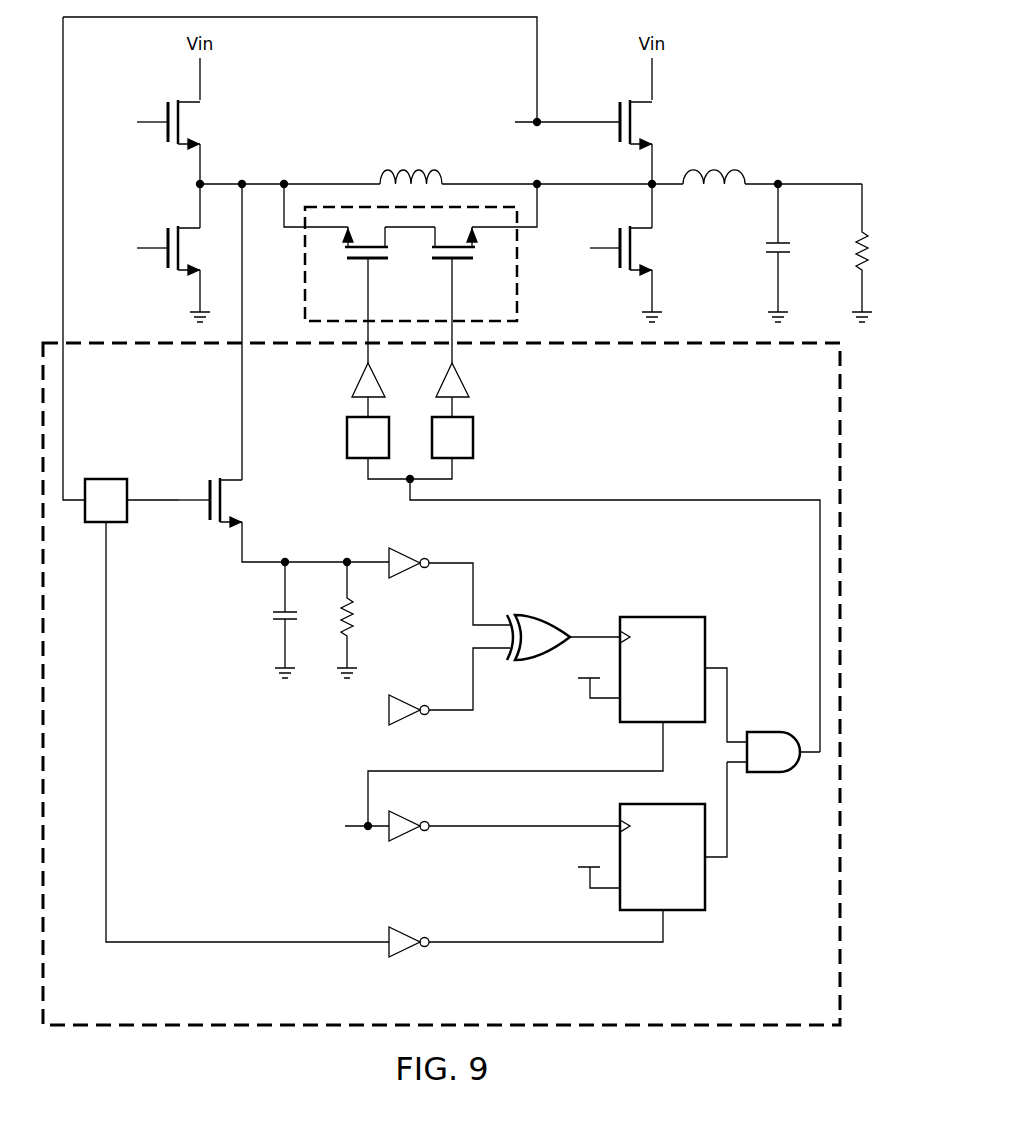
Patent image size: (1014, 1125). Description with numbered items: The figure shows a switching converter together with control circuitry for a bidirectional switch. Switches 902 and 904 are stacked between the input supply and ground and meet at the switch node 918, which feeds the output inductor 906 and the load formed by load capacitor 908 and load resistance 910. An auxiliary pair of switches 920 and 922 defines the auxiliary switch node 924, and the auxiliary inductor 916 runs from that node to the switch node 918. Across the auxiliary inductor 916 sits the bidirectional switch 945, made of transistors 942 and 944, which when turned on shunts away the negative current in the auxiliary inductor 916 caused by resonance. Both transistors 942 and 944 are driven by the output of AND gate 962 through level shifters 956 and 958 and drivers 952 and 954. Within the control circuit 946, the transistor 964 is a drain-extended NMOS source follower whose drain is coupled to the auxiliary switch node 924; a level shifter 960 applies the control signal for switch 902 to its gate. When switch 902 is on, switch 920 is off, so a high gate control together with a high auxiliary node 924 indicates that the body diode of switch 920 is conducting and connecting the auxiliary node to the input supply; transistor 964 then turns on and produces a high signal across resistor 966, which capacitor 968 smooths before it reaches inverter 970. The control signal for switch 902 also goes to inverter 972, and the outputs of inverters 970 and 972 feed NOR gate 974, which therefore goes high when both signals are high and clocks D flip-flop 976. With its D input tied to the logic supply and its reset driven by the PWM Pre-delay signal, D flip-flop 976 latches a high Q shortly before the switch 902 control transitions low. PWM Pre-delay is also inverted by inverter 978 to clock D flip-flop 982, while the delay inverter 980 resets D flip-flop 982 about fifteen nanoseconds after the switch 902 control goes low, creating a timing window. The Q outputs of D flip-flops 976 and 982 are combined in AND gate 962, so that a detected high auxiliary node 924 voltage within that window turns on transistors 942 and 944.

The switch 902 is at (617, 117).
The switch 904 is at (617, 244).
The inductor 906 is at (740, 174).
The load capacitor 908 is at (789, 250).
The load resistance 910 is at (866, 252).
The auxiliary inductor 916 is at (382, 170).
The switch node 918 is at (648, 182).
The switch 920 is at (165, 117).
The switch 922 is at (165, 244).
The auxiliary switch node 924 is at (204, 182).
The transistor 942 is at (461, 262).
The transistor 944 is at (363, 262).
The bidirectional switch 945 is at (441, 273).
The control circuit 946 is at (276, 1030).
The driver 952 is at (350, 378).
The driver 954 is at (469, 378).
The level shifter 956 is at (348, 436).
The level shifter 958 is at (471, 436).
The level shifter 960 is at (100, 480).
The AND gate 962 is at (765, 776).
The transistor 964 is at (209, 498).
The resistor 966 is at (272, 616).
The capacitor 968 is at (349, 618).
The inverter 970 is at (410, 560).
The inverter 972 is at (410, 722).
The NOR gate 974 is at (534, 616).
The D flip-flop 976 is at (663, 617).
The inverter 978 is at (410, 836).
The delay inverter 980 is at (410, 952).
The D flip-flop 982 is at (705, 878).